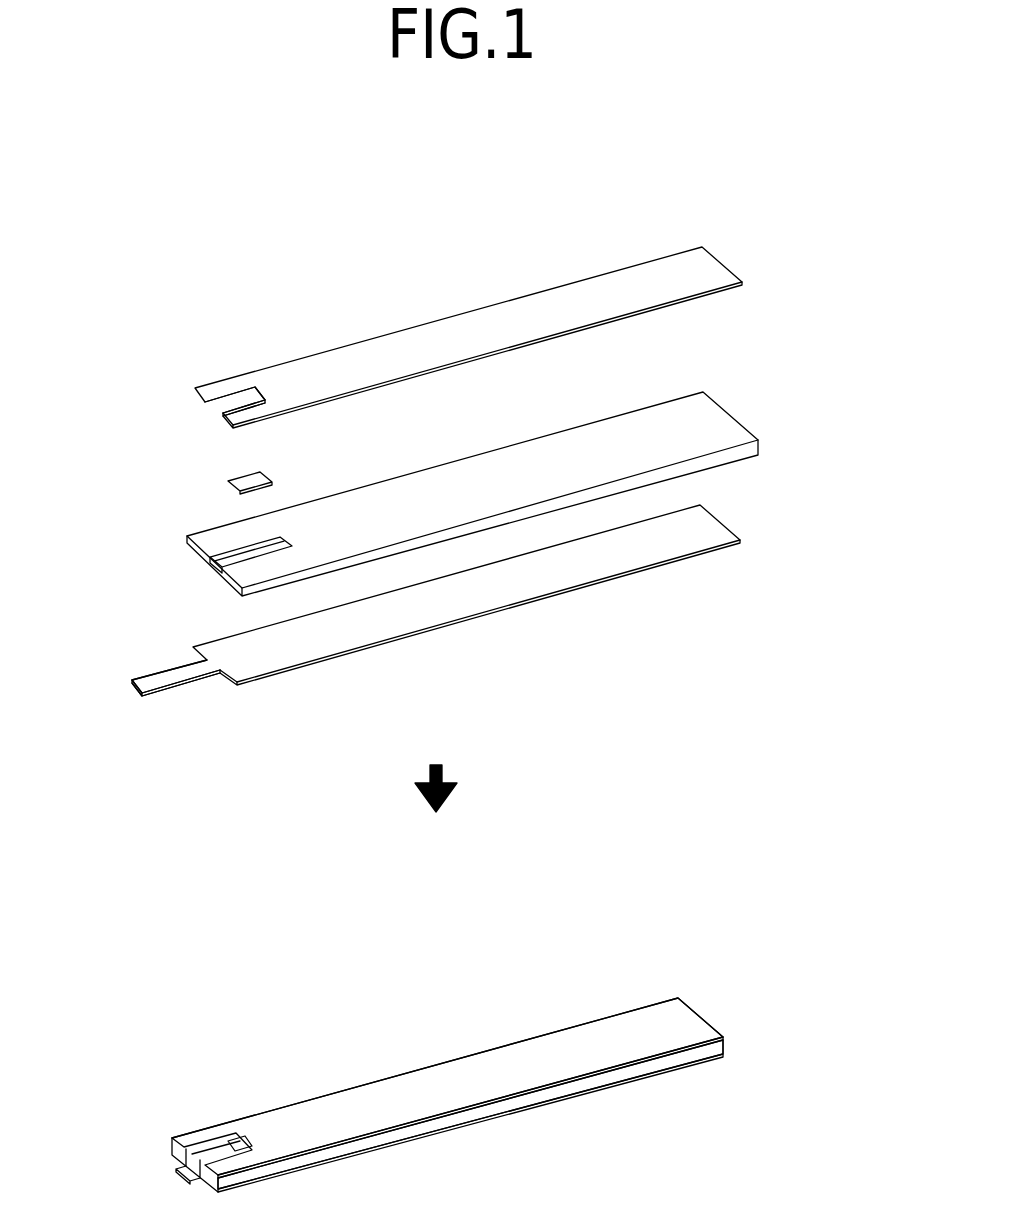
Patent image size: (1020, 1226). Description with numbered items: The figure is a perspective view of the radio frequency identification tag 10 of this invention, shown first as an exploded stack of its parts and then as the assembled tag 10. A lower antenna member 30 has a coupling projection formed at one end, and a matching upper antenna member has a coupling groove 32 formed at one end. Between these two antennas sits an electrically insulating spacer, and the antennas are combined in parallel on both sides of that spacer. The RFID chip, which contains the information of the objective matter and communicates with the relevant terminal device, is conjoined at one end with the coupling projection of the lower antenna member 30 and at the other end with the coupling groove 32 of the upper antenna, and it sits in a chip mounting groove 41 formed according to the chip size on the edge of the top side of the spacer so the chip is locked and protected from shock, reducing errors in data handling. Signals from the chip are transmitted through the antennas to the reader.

The RFID tag 10 is at (722, 980).
The lower antenna member 30 is at (437, 600).
The coupling groove 32 is at (235, 404).
The chip mounting groove 41 is at (210, 557).